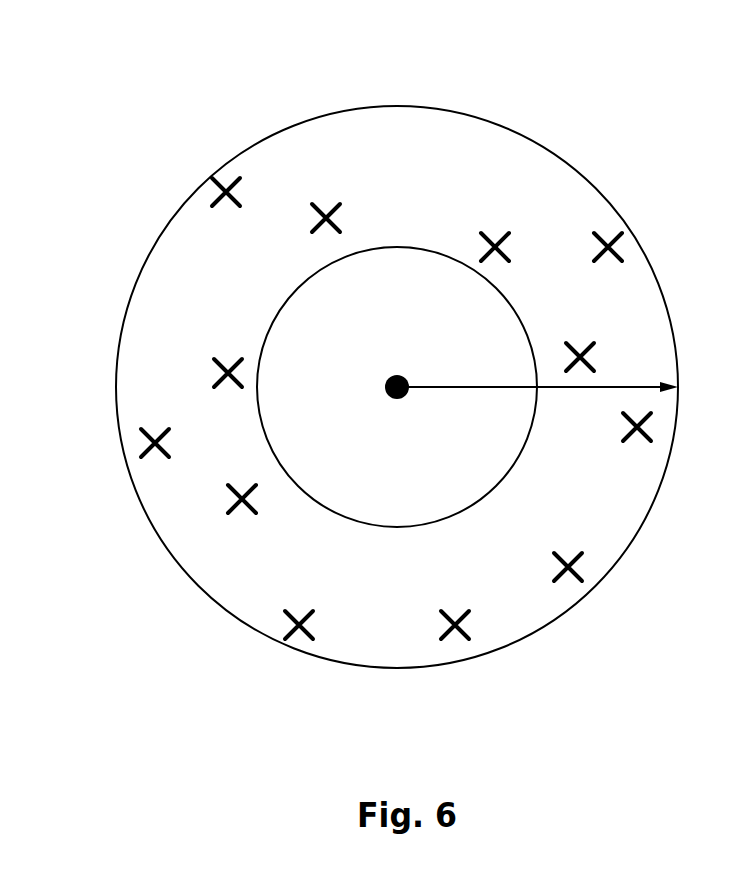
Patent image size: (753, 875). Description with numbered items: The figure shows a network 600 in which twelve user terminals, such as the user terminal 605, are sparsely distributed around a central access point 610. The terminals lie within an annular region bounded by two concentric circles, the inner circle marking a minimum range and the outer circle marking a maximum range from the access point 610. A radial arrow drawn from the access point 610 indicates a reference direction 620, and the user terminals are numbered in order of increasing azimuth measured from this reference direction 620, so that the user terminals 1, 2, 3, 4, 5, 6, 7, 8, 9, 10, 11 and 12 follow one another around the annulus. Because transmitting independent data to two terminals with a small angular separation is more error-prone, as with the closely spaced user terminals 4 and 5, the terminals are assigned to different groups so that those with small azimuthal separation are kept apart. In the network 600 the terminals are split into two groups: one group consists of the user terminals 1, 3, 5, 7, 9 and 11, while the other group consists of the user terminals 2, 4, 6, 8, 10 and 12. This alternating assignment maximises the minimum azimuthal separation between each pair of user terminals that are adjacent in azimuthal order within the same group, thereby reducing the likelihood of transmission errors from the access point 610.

The network 600 is at (141, 127).
The user terminal 605 is at (101, 396).
The access point 610 is at (391, 378).
The reference direction 620 is at (493, 386).
The user terminal 1 is at (580, 343).
The user terminal 2 is at (608, 258).
The user terminal 3 is at (495, 233).
The user terminal 4 is at (326, 205).
The user terminal 5 is at (217, 204).
The user terminal 6 is at (228, 358).
The user terminal 7 is at (155, 430).
The user terminal 8 is at (242, 486).
The user terminal 9 is at (299, 610).
The user terminal 10 is at (456, 610).
The user terminal 11 is at (568, 554).
The user terminal 12 is at (624, 427).